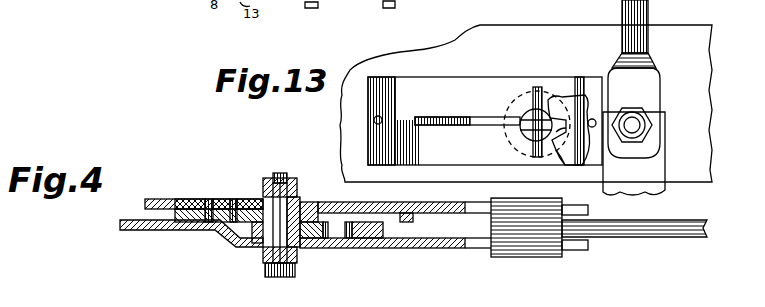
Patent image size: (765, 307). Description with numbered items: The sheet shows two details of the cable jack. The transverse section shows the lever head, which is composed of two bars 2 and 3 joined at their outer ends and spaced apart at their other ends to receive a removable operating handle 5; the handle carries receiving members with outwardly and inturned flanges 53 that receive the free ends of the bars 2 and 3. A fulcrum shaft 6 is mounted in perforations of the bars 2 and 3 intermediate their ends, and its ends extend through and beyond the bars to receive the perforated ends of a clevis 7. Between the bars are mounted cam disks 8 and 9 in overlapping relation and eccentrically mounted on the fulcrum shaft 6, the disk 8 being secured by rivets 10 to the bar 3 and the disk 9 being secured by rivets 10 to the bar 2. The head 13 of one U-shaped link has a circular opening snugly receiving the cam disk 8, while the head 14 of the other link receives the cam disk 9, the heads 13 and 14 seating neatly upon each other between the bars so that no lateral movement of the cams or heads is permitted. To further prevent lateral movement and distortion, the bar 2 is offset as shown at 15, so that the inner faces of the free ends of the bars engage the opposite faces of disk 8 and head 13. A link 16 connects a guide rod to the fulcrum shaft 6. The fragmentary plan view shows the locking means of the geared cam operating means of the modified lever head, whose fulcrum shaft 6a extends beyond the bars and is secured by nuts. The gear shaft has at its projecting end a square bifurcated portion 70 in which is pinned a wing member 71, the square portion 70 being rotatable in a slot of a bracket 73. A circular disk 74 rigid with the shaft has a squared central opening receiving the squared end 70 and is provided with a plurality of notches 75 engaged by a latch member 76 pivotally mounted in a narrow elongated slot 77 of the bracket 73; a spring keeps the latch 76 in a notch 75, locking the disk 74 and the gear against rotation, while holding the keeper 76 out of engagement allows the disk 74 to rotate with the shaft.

In FIG. 4, the bar 2 is at (465, 250).
In FIG. 4, the bar 3 is at (450, 206).
In FIG. 4, the removable operating handle 5 is at (648, 238).
In FIG. 4, the fulcrum shaft 6 is at (281, 173).
In FIG. 13, the fulcrum shaft 6a is at (640, 124).
In FIG. 13, the clevis 7 is at (648, 14).
In FIG. 4, the clevis 7 is at (263, 182).
In FIG. 4, the cam disk 8 is at (222, 199).
In FIG. 4, the cam disk 9 is at (309, 240).
In FIG. 4, the rivets 10 is at (209, 199).
In FIG. 4, the head 13 is at (190, 199).
In FIG. 4, the head 14 is at (380, 238).
In FIG. 4, the offset 15 is at (226, 242).
In FIG. 13, the link 16 is at (660, 173).
In FIG. 4, the link 16 is at (258, 245).
In FIG. 4, the flanges 53 is at (525, 257).
In FIG. 13, the square bifurcated portion 70 is at (522, 133).
In FIG. 13, the wing member 71 is at (542, 90).
In FIG. 13, the bracket 73 is at (395, 86).
In FIG. 13, the disk 74 is at (563, 159).
In FIG. 13, the notches 75 is at (556, 130).
In FIG. 13, the latch member 76 is at (470, 117).
In FIG. 13, the narrow elongated slot 77 is at (418, 126).